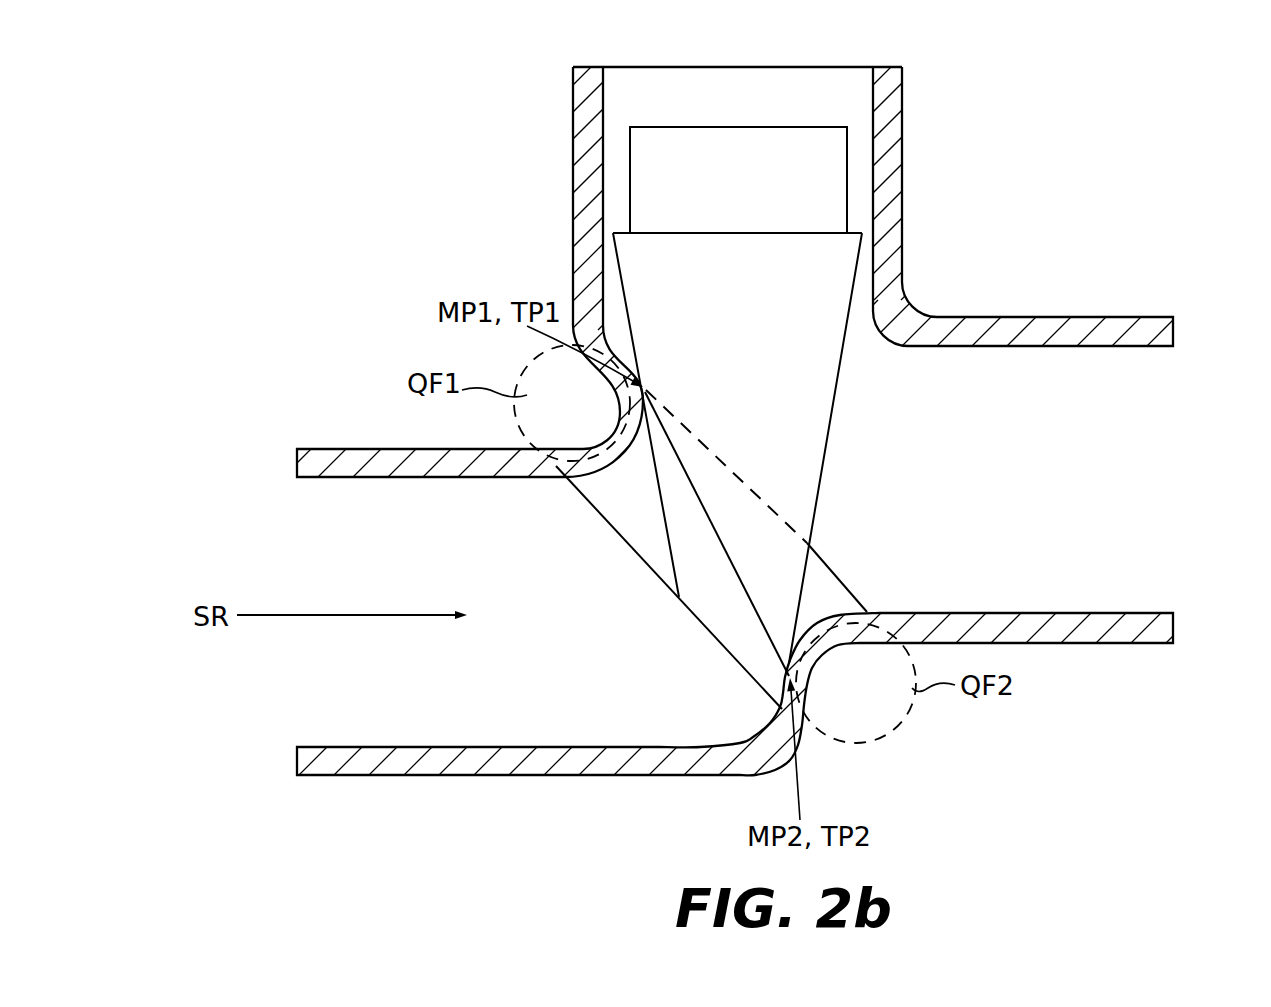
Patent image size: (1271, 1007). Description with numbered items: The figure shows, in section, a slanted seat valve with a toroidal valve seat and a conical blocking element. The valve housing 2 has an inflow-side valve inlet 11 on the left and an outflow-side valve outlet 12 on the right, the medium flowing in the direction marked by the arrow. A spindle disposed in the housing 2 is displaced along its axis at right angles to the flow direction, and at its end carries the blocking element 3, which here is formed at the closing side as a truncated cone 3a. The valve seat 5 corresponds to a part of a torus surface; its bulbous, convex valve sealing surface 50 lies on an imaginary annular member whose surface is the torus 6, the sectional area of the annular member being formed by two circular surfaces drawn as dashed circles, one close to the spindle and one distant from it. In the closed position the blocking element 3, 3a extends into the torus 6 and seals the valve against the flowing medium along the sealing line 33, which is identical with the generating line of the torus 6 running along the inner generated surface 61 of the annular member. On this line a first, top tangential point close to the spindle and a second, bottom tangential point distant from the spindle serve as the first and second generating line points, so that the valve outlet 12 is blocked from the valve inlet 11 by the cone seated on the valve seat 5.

The valve housing 2 is at (795, 90).
The blocking element 3 is at (830, 297).
The truncated cone 3a is at (745, 652).
The valve seat 5 is at (614, 448).
The torus 6 is at (910, 715).
The valve inlet 11 is at (333, 710).
The valve outlet 12 is at (1155, 579).
The sealing line 33 is at (738, 583).
The valve sealing surface 50 is at (640, 430).
The inner generated surface 61 is at (623, 505).